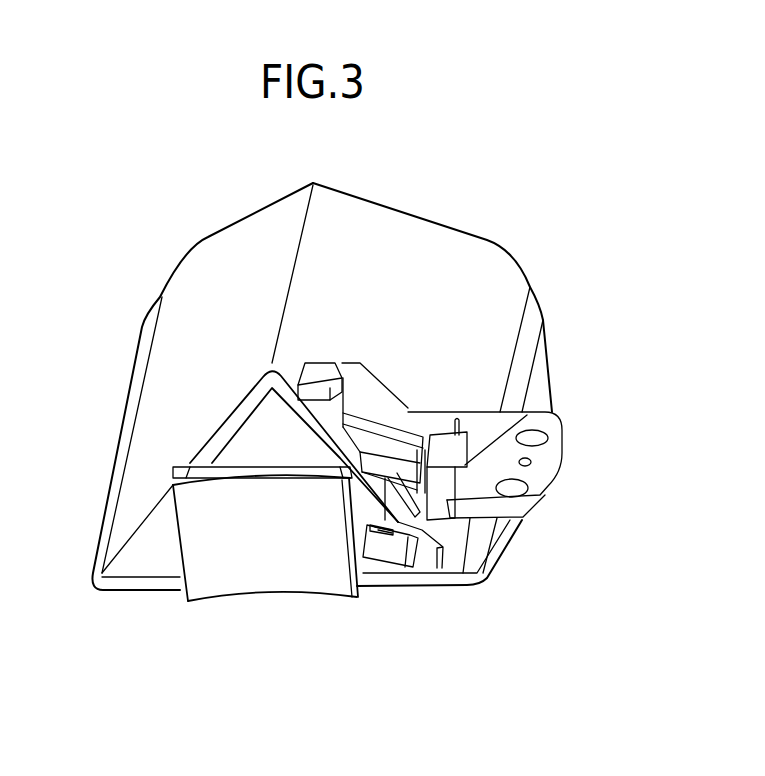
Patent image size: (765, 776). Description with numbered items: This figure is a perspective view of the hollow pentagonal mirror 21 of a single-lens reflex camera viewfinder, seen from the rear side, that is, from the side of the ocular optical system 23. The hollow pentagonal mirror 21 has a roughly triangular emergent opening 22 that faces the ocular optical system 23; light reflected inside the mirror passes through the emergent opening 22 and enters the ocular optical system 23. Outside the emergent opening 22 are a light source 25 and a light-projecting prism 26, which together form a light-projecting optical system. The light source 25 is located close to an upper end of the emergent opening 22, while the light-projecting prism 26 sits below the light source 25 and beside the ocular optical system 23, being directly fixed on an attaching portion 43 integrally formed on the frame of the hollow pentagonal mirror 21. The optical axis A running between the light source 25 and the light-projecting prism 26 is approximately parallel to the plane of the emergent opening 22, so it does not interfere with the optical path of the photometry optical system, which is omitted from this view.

The hollow pentagonal mirror 21 is at (418, 214).
The emergent opening 22 is at (253, 433).
The ocular optical system 23 is at (272, 580).
The light source 25 is at (410, 420).
The light-projecting prism 26 is at (382, 553).
The attaching portion 43 is at (432, 550).
The optical axis A is at (348, 525).